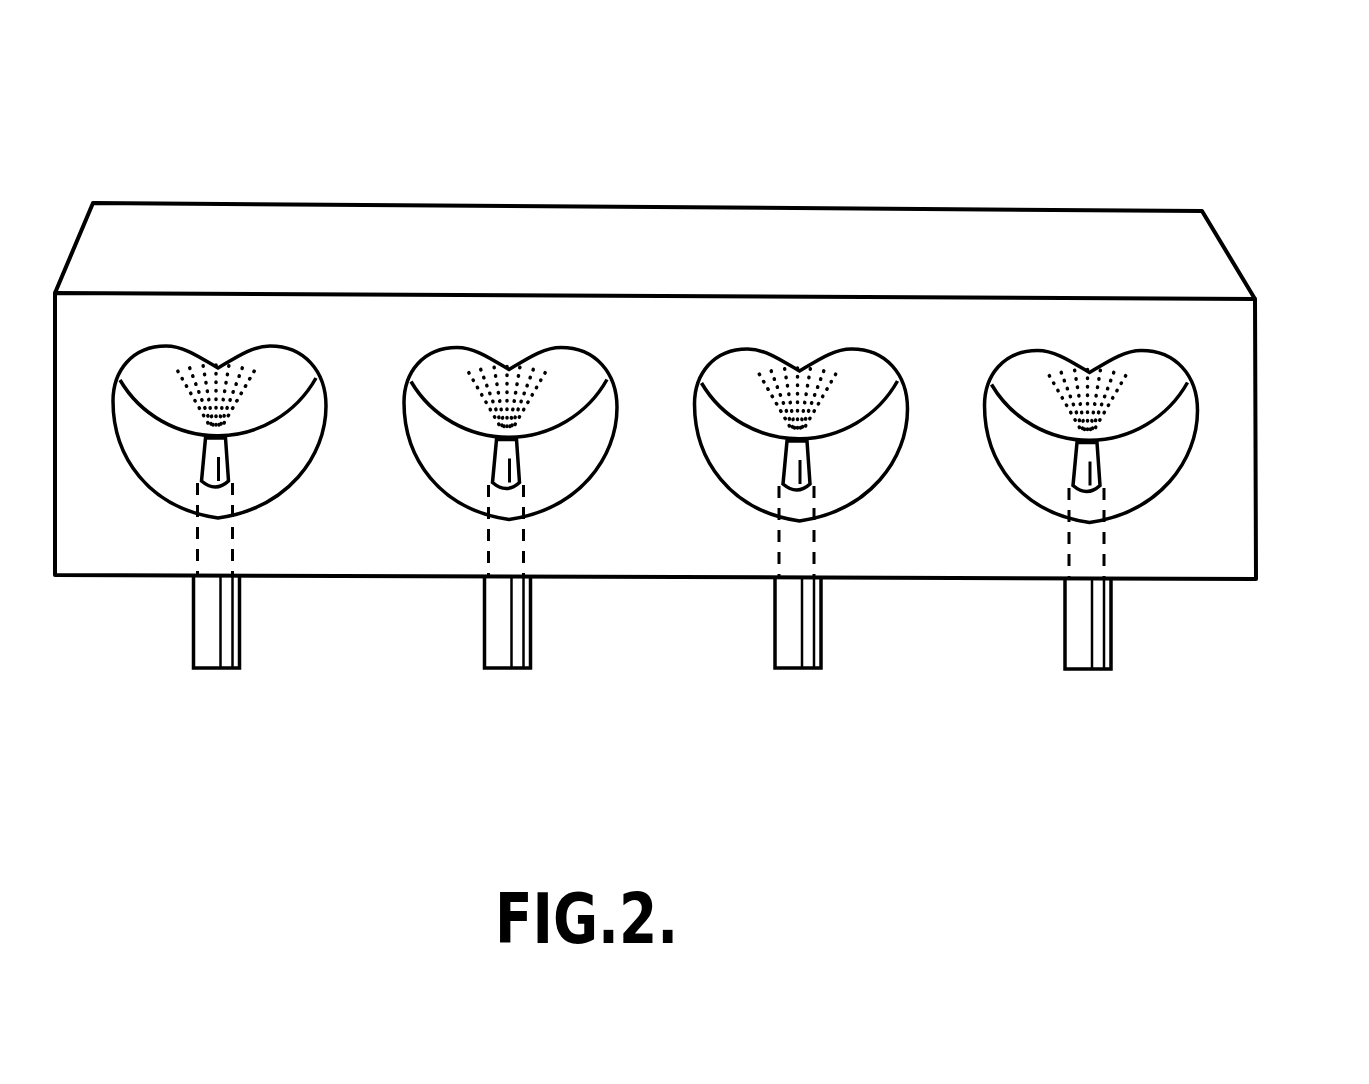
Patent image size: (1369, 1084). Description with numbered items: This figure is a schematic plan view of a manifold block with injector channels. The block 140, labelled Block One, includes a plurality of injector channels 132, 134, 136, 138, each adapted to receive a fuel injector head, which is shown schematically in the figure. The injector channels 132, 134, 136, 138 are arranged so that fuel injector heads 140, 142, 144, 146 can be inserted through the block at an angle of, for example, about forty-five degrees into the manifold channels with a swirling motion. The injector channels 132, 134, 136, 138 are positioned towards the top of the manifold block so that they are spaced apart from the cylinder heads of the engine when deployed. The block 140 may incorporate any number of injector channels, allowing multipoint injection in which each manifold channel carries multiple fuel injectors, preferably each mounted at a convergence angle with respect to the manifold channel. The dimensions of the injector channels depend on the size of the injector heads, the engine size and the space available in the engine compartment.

The injector channel 132 is at (199, 538).
The injector channel 134 is at (485, 548).
The injector channel 136 is at (778, 542).
The injector channel 138 is at (1068, 552).
The block 140 is at (1128, 172).
The fuel injector head 142 is at (520, 463).
The fuel injector head 144 is at (807, 463).
The fuel injector head 146 is at (1097, 463).